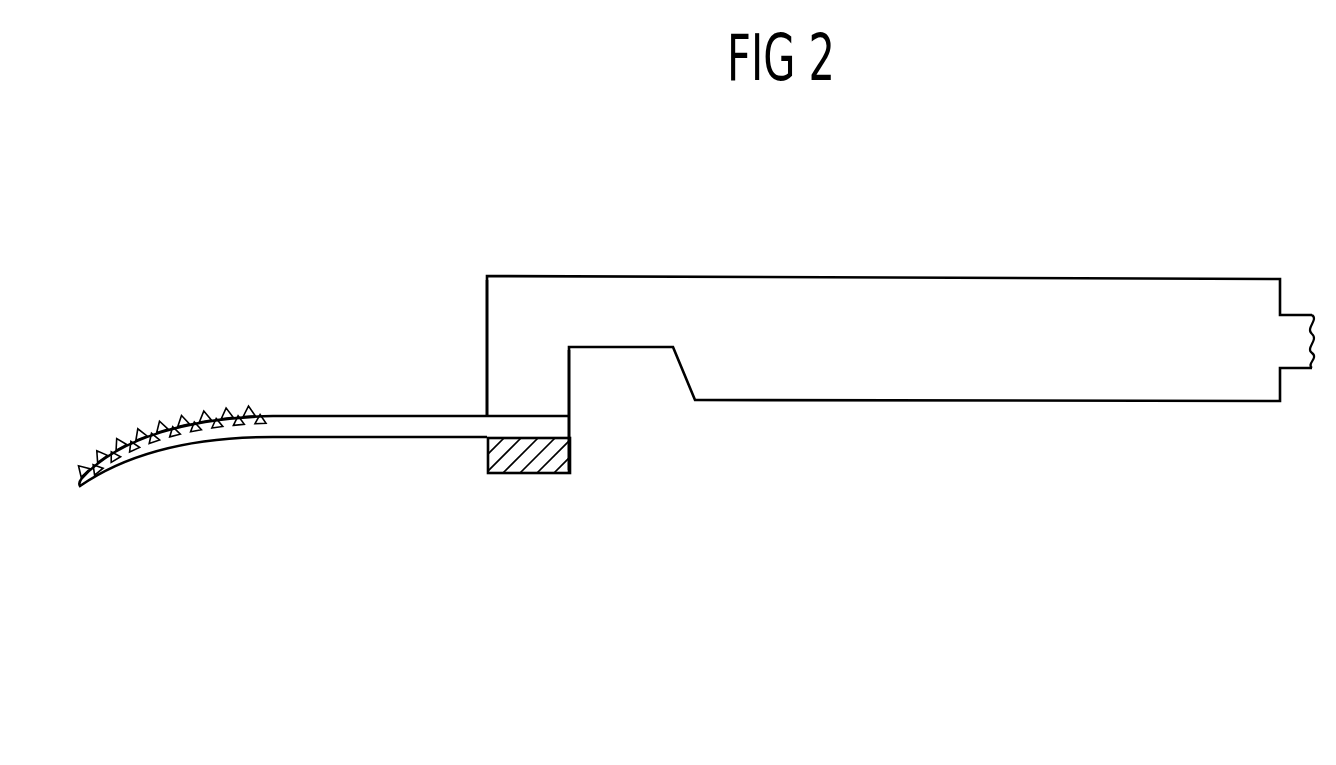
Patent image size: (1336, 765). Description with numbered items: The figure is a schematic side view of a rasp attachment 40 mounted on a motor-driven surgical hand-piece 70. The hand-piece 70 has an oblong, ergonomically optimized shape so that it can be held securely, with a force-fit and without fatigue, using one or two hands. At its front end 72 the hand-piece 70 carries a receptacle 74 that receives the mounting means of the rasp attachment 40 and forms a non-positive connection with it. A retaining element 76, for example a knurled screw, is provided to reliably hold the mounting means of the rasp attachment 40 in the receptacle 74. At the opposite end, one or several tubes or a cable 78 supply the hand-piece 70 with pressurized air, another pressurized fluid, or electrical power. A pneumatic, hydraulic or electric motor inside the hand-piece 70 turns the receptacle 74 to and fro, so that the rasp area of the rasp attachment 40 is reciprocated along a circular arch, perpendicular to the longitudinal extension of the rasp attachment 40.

The rasp attachment 40 is at (311, 415).
The motor-driven surgical hand-piece 70 is at (860, 312).
The front end 72 is at (487, 338).
The receptacle 74 is at (571, 429).
The retaining element 76 is at (482, 476).
The cable 78 is at (1288, 325).